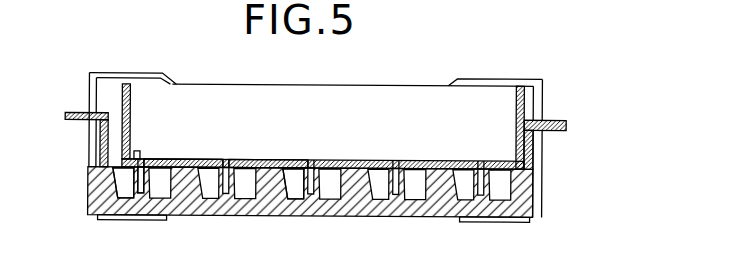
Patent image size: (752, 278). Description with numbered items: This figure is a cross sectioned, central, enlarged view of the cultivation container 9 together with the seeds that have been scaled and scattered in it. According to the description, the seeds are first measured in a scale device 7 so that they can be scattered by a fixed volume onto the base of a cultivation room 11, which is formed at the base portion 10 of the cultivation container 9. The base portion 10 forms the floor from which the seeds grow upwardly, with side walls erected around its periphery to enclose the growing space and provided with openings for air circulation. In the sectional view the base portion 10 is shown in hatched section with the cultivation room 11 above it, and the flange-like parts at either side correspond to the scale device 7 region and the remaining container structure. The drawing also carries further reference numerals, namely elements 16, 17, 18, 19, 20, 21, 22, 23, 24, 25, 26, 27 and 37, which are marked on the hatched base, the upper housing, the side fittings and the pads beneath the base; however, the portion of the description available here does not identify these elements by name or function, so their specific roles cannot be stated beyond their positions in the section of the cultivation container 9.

The scale device 7 is at (553, 112).
The cultivation container 9 is at (546, 177).
The base portion 10 is at (295, 208).
The cultivation room 11 is at (118, 190).
The left terminal fitting 16 is at (103, 101).
The plate portion 17 is at (187, 164).
The contact 18 is at (137, 159).
The slot 19 is at (143, 191).
The leg 20 is at (100, 137).
The flange 21 is at (67, 116).
The housing 22 is at (322, 145).
The housing side wall 23 is at (132, 88).
The clip 24 is at (112, 113).
The bottom plate 25 is at (265, 159).
The contact element 26 is at (162, 159).
The plate segment 27 is at (233, 159).
The pad 37 is at (468, 222).